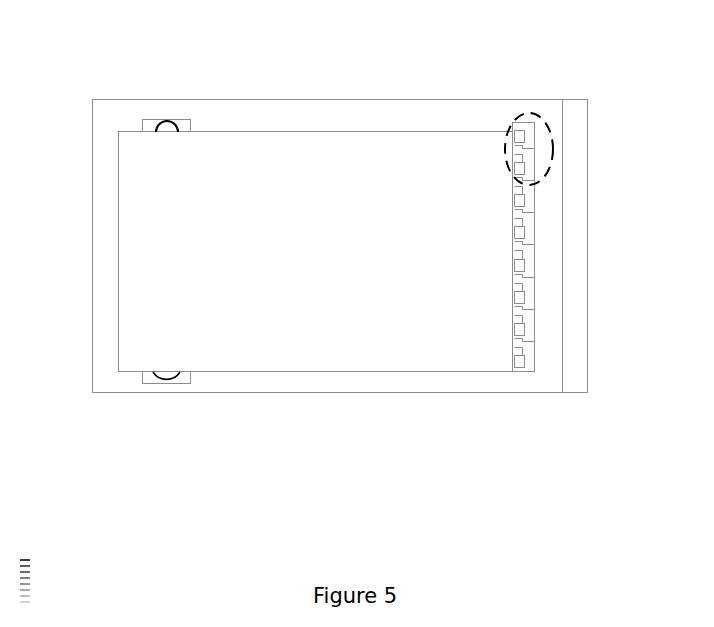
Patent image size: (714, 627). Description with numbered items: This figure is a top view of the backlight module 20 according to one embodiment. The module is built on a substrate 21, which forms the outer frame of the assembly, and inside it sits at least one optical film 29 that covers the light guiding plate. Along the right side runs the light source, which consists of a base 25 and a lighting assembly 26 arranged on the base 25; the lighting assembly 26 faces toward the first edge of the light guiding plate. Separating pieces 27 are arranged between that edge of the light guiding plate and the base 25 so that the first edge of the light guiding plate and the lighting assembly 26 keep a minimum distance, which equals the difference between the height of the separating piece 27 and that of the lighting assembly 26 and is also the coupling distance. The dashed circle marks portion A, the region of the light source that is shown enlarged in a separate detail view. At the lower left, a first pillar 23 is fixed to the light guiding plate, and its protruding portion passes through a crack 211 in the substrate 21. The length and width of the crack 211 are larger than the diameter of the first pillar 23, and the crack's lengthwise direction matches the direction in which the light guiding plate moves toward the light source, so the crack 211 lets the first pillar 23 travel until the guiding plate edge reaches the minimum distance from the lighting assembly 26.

The backlight module 20 is at (350, 283).
The substrate 21 is at (108, 325).
The crack 211 is at (148, 374).
The first pillar 23 is at (165, 374).
The base 25 is at (532, 363).
The lighting assembly 26 is at (518, 330).
The separating piece 27 is at (515, 345).
The optical film 29 is at (383, 170).
The portion A is at (562, 144).